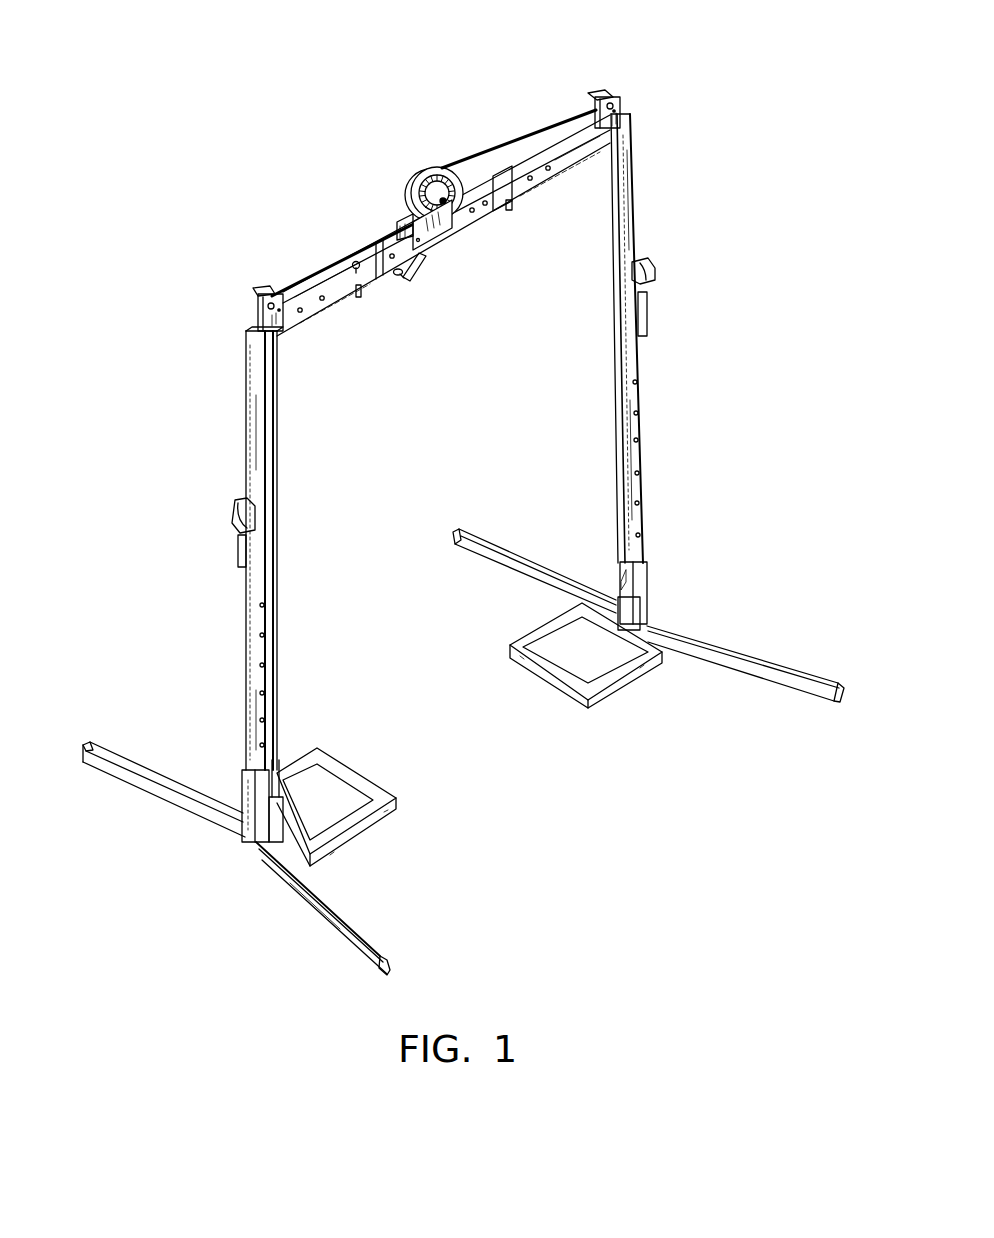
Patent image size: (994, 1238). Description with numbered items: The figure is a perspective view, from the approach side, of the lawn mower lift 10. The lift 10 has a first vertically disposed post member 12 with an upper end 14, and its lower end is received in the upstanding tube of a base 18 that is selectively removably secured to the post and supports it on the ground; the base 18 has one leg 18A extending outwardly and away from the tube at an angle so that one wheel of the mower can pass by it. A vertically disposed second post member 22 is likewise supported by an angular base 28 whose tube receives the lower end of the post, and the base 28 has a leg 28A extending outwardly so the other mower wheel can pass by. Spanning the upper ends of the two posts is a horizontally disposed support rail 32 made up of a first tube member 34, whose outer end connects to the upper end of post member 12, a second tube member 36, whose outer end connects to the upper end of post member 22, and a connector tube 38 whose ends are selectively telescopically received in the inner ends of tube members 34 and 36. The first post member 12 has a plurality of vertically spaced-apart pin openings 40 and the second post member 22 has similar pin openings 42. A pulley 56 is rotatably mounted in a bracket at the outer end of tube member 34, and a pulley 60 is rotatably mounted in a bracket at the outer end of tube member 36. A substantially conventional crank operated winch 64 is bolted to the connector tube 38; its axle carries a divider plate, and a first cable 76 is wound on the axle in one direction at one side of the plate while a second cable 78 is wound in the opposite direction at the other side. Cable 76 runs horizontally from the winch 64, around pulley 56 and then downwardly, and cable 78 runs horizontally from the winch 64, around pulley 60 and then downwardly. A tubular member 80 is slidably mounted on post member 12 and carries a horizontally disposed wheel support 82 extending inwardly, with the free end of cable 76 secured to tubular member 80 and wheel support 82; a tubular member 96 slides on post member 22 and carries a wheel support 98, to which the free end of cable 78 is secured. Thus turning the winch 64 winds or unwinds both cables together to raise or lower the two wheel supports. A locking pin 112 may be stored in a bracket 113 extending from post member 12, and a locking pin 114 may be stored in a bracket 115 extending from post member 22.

The lawn mower lift 10 is at (676, 217).
The first post member 12 is at (238, 436).
The upper end of first post member 14 is at (247, 333).
The base 18 is at (272, 925).
The leg of base 18A is at (353, 930).
The second post member 22 is at (657, 490).
The angular base 28 is at (724, 626).
The leg of angular base 28A is at (775, 664).
The support rail 32 is at (394, 303).
The first tube member 34 is at (304, 312).
The second tube member 36 is at (524, 185).
The connector tube 38 is at (475, 225).
The pin openings 40 is at (266, 635).
The pin openings 42 is at (641, 413).
The pulley 56 is at (271, 292).
The pulley 60 is at (601, 93).
The crank operated winch 64 is at (434, 155).
The first cable 76 is at (328, 255).
The second cable 78 is at (490, 150).
The tubular member 80 is at (255, 820).
The wheel support 82 is at (340, 745).
The tubular member 96 is at (646, 588).
The wheel support 98 is at (544, 691).
The locking pin 112 is at (238, 510).
The bracket 113 is at (239, 540).
The locking pin 114 is at (654, 270).
The bracket 115 is at (648, 300).